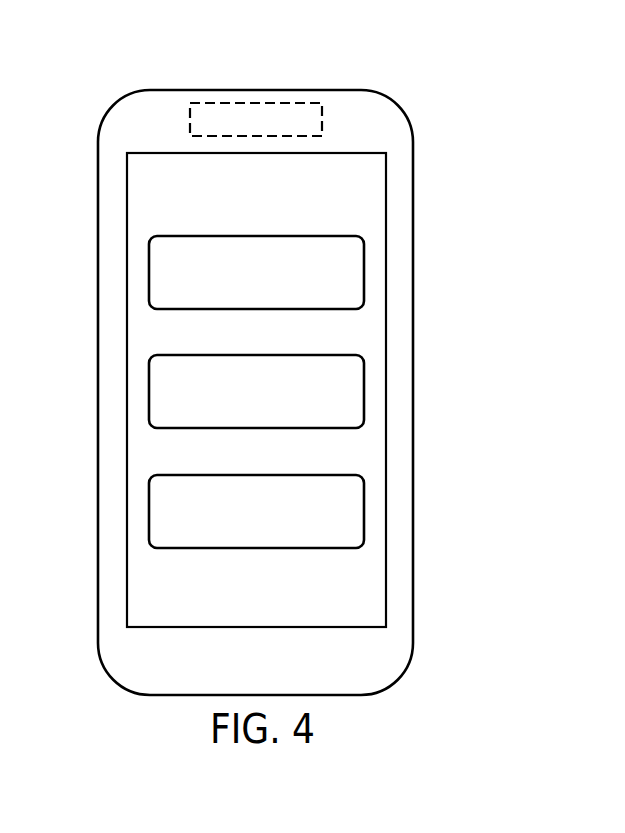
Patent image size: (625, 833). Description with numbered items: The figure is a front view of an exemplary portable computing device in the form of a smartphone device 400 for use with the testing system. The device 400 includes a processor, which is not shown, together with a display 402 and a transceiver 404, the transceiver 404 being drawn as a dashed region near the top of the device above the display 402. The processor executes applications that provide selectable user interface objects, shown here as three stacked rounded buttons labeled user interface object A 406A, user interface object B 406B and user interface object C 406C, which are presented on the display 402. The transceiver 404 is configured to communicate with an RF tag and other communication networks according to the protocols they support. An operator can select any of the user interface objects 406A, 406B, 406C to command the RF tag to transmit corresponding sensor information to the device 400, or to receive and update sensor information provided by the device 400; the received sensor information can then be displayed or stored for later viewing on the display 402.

The smartphone device 400 is at (165, 60).
The display 402 is at (148, 217).
The transceiver 404 is at (258, 112).
The user interface object 406A is at (364, 269).
The user interface object 406B is at (364, 389).
The user interface object 406C is at (364, 509).